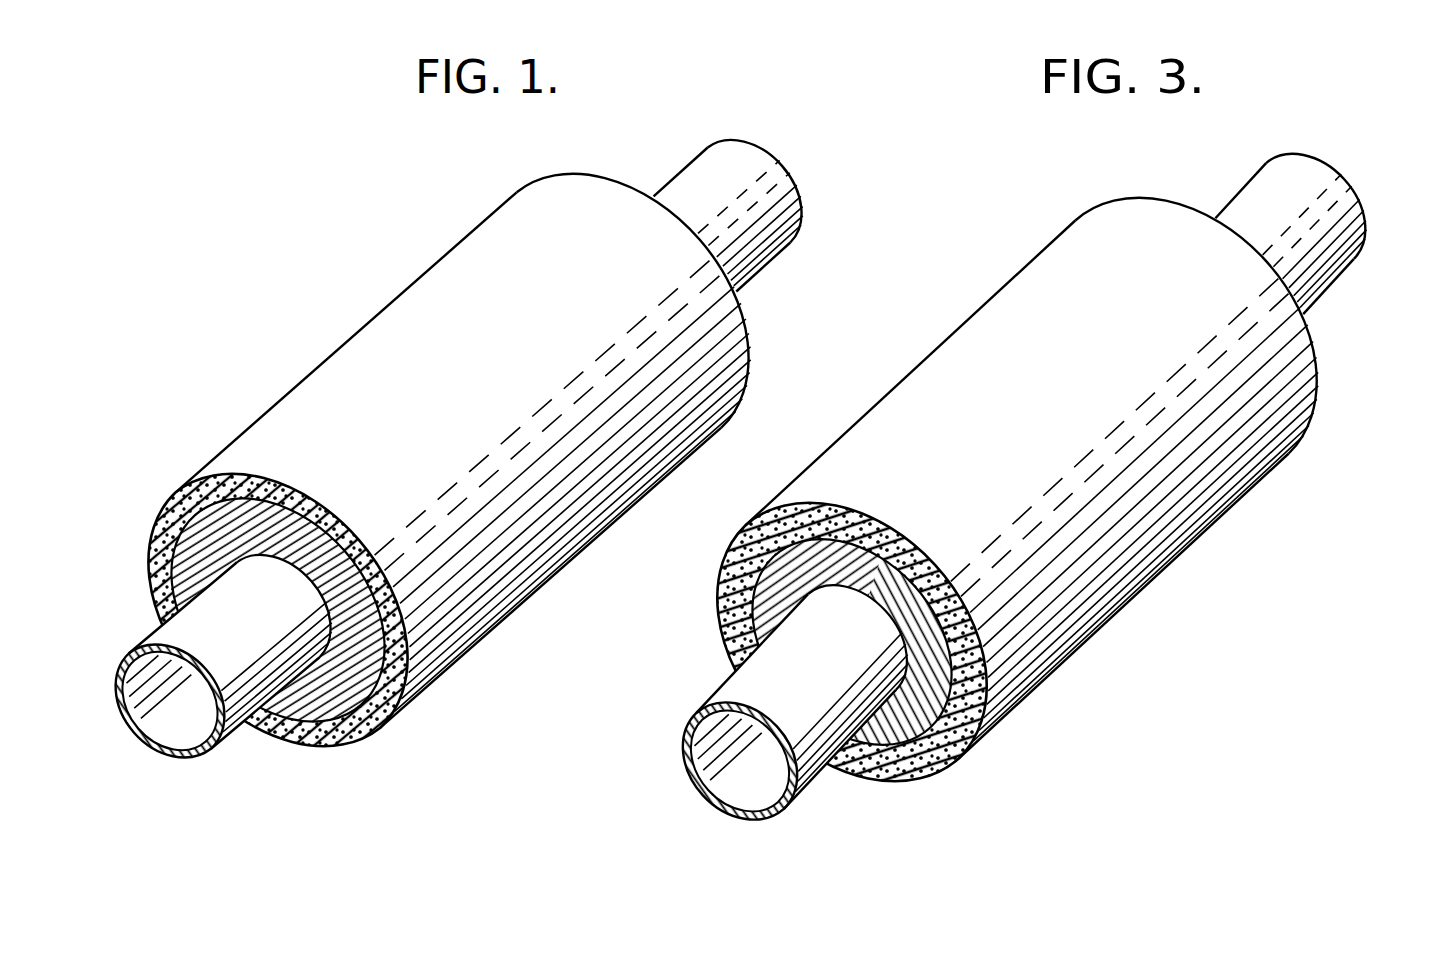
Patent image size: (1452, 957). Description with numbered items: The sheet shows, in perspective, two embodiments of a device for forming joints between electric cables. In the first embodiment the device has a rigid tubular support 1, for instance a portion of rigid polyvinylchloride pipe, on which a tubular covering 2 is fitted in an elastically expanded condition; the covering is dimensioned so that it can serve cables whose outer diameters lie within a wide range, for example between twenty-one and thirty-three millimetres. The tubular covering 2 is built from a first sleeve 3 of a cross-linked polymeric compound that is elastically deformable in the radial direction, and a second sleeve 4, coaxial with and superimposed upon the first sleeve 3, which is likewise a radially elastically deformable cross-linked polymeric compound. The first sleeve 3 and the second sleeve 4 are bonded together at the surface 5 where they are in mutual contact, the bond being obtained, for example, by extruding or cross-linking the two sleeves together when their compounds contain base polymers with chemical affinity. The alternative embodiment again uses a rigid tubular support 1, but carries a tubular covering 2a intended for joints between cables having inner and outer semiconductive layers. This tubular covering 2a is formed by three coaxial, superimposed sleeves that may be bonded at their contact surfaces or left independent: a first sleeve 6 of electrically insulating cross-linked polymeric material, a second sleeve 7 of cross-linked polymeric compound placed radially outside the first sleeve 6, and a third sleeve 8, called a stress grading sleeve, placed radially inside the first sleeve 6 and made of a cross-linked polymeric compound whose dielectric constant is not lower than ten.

In FIG. 1, the rigid tubular support 1 is at (152, 742).
In FIG. 3, the rigid tubular support 1 is at (757, 818).
In FIG. 1, the tubular covering 2 is at (351, 342).
In FIG. 3, the tubular covering 2a is at (969, 320).
In FIG. 1, the first sleeve 3 is at (288, 736).
In FIG. 1, the second sleeve 4 is at (333, 741).
In FIG. 1, the surface 5 is at (418, 666).
In FIG. 3, the first sleeve 6 is at (945, 683).
In FIG. 3, the second sleeve 7 is at (990, 661).
In FIG. 3, the third sleeve 8 is at (935, 766).